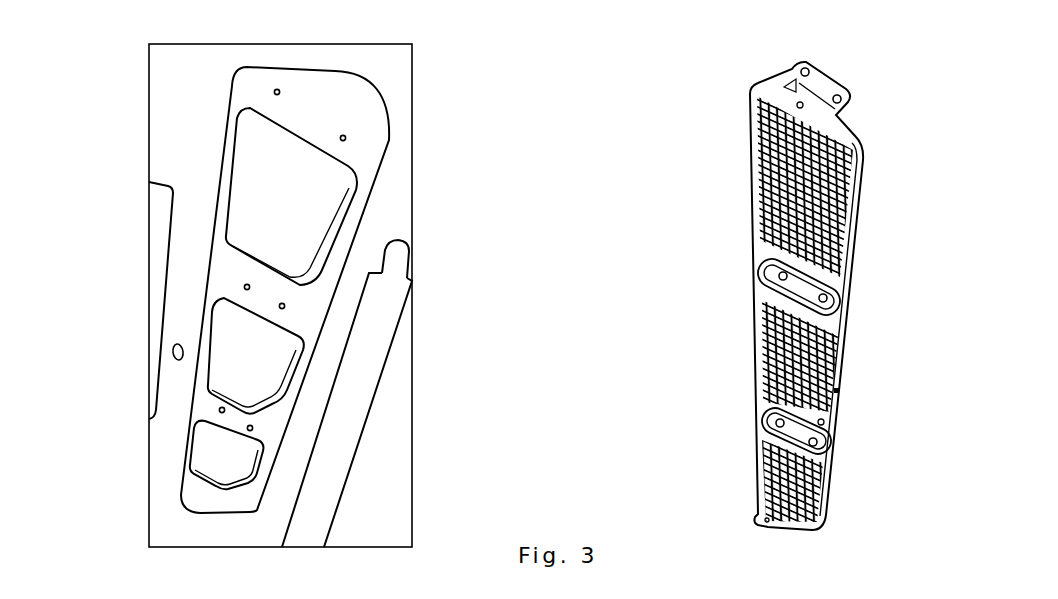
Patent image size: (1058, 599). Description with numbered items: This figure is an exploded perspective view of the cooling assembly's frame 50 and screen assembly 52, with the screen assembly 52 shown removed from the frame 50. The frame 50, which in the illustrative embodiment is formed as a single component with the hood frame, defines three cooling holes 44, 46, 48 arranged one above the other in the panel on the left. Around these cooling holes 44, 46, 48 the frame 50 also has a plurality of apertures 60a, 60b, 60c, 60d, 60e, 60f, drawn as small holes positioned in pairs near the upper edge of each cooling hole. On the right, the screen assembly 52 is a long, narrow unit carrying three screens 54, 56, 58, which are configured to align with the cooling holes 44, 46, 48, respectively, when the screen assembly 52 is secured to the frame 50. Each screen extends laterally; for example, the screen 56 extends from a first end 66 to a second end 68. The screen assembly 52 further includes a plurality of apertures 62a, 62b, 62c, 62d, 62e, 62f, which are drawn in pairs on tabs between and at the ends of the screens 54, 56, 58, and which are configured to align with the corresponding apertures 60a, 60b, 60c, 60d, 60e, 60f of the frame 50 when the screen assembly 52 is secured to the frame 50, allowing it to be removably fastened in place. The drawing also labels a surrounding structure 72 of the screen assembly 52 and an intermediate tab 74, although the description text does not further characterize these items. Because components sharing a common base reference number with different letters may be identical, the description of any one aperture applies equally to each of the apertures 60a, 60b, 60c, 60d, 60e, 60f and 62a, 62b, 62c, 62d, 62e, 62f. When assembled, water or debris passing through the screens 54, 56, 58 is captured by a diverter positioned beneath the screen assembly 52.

The frame 50 is at (420, 141).
The cooling hole 44 is at (317, 212).
The cooling hole 46 is at (273, 370).
The cooling hole 48 is at (237, 462).
The aperture 60a is at (219, 411).
The aperture 60b is at (247, 429).
The aperture 60c is at (244, 288).
The aperture 60d is at (279, 307).
The aperture 60e is at (274, 93).
The aperture 60f is at (340, 139).
The screen assembly 52 is at (808, 270).
The grille frame 72 is at (848, 298).
The screen 54 is at (840, 206).
The screen 56 is at (838, 353).
The screen 58 is at (824, 487).
The upper mounting bracket 74 is at (756, 287).
The second end 68 is at (751, 453).
The first end 66 is at (839, 390).
The aperture 62a is at (768, 428).
The aperture 62b is at (762, 488).
The aperture 62c is at (765, 283).
The aperture 62d is at (765, 332).
The aperture 62e is at (802, 69).
The aperture 62f is at (848, 90).